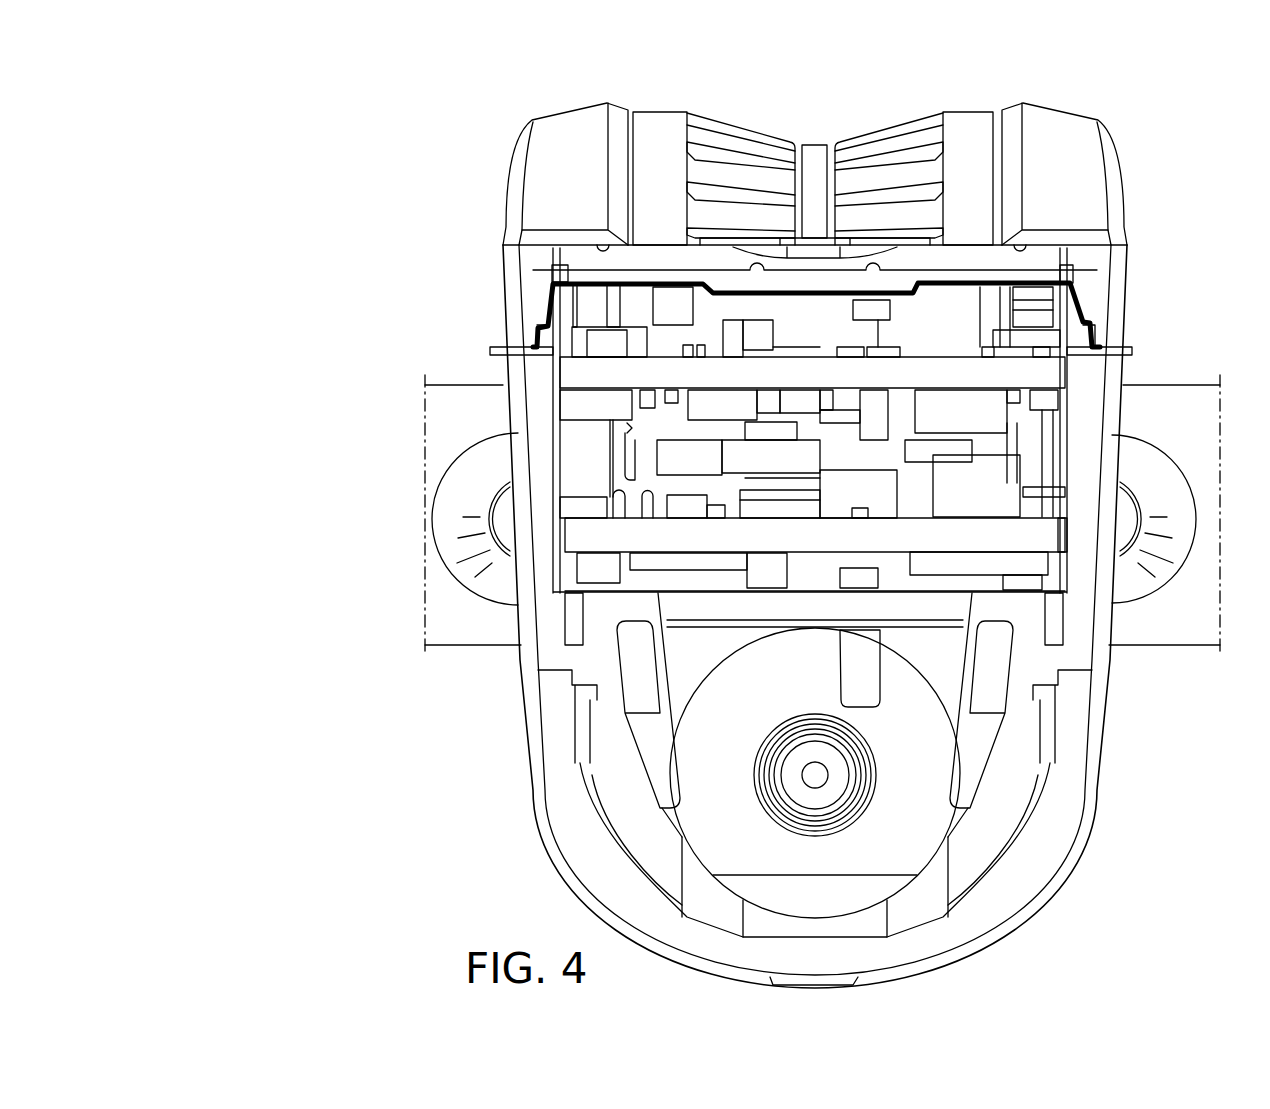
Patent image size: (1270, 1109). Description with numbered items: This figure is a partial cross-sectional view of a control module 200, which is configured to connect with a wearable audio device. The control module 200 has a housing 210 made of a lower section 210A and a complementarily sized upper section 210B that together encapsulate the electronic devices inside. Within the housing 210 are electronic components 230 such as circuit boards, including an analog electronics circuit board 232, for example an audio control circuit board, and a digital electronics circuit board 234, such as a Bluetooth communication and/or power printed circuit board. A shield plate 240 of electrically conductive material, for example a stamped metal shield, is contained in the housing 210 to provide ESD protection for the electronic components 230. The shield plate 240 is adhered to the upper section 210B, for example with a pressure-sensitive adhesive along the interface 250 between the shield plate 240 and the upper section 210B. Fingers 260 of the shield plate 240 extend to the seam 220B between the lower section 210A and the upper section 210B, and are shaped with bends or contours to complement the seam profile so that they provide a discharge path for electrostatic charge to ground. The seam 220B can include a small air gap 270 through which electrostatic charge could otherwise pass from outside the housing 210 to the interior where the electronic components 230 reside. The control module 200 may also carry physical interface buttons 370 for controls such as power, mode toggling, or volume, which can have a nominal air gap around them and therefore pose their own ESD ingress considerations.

The control module 200 is at (252, 124).
The housing 210 is at (400, 262).
The lower section 210A is at (534, 829).
The upper section 210B is at (500, 162).
The seam 220B is at (490, 353).
The electronic components 230 is at (703, 300).
The analog electronics circuit board 232 is at (830, 546).
The digital electronics circuit board 234 is at (830, 386).
The shield plate 240 is at (546, 290).
The interface 250 is at (1046, 278).
The fingers 260 is at (522, 331).
The air gap 270 is at (1138, 351).
The physical interface buttons 370 is at (648, 102).